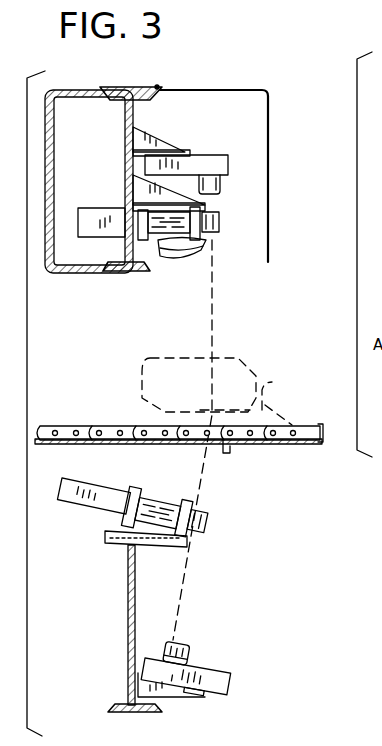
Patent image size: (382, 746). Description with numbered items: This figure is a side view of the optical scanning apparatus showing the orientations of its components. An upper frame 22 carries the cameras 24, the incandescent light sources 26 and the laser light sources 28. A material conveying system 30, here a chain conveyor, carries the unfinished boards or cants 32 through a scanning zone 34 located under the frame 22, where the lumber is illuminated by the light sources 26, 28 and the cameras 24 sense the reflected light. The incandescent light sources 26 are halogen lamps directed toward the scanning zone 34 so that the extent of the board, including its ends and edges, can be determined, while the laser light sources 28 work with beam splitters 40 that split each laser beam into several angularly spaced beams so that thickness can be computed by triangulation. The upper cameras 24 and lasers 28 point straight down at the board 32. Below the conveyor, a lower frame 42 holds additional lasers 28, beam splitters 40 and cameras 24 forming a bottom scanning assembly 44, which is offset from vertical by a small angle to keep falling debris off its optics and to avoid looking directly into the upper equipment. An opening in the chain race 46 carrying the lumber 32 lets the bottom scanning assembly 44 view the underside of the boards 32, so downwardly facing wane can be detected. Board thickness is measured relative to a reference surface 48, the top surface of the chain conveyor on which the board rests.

The frame 22 is at (125, 150).
The cameras 24 is at (213, 156).
The incandescent light sources 26 is at (180, 258).
The laser light sources 28 is at (93, 208).
The material conveying system 30 is at (90, 425).
The boards or cants 32 is at (242, 357).
The scanning zone 34 is at (228, 293).
The beam splitters 40 is at (221, 222).
The lower frame 42 is at (128, 605).
The bottom scanning assembly 44 is at (236, 517).
The chain race 46 is at (230, 452).
The reference surface 48 is at (313, 425).